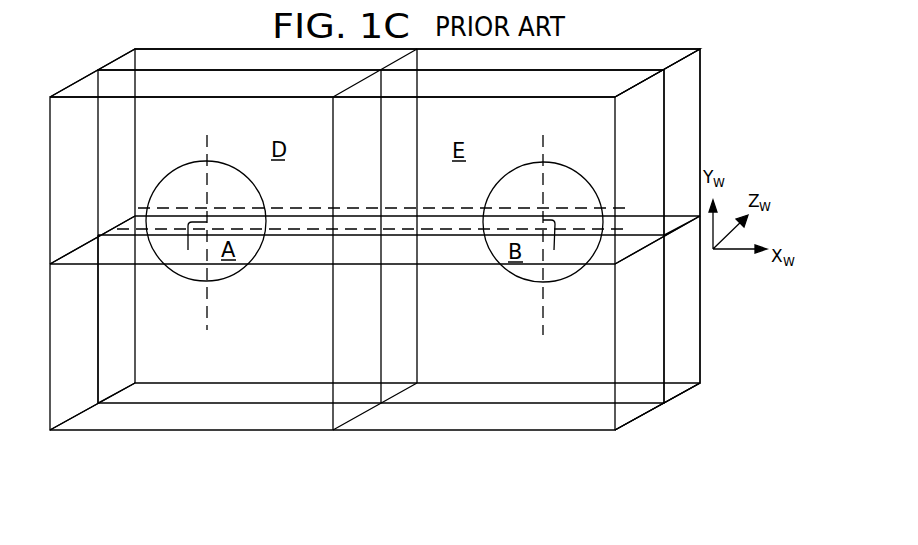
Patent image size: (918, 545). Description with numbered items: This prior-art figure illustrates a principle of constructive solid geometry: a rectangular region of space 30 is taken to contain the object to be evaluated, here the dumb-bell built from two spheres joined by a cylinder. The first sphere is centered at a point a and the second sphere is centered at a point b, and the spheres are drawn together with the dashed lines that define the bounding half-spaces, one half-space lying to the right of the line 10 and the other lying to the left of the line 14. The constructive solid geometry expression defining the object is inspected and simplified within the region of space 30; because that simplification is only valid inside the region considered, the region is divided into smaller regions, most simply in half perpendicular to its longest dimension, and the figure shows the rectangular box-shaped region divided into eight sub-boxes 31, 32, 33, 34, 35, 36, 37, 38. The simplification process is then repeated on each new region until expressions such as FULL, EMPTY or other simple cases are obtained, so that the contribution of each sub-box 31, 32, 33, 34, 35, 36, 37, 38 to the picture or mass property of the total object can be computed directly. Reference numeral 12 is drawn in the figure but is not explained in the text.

The line 10 is at (454, 319).
The first hole centerline 12 is at (207, 297).
The line 14 is at (543, 310).
The rectangular region of space 30 is at (698, 350).
The sub-box 31 is at (167, 90).
The sub-box 32 is at (640, 134).
The sub-box 33 is at (78, 377).
The sub-box 34 is at (632, 362).
The sub-box 35 is at (152, 55).
The sub-box 36 is at (682, 88).
The sub-box 37 is at (115, 332).
The sub-box 38 is at (680, 276).
The point a is at (188, 250).
The point b is at (554, 250).